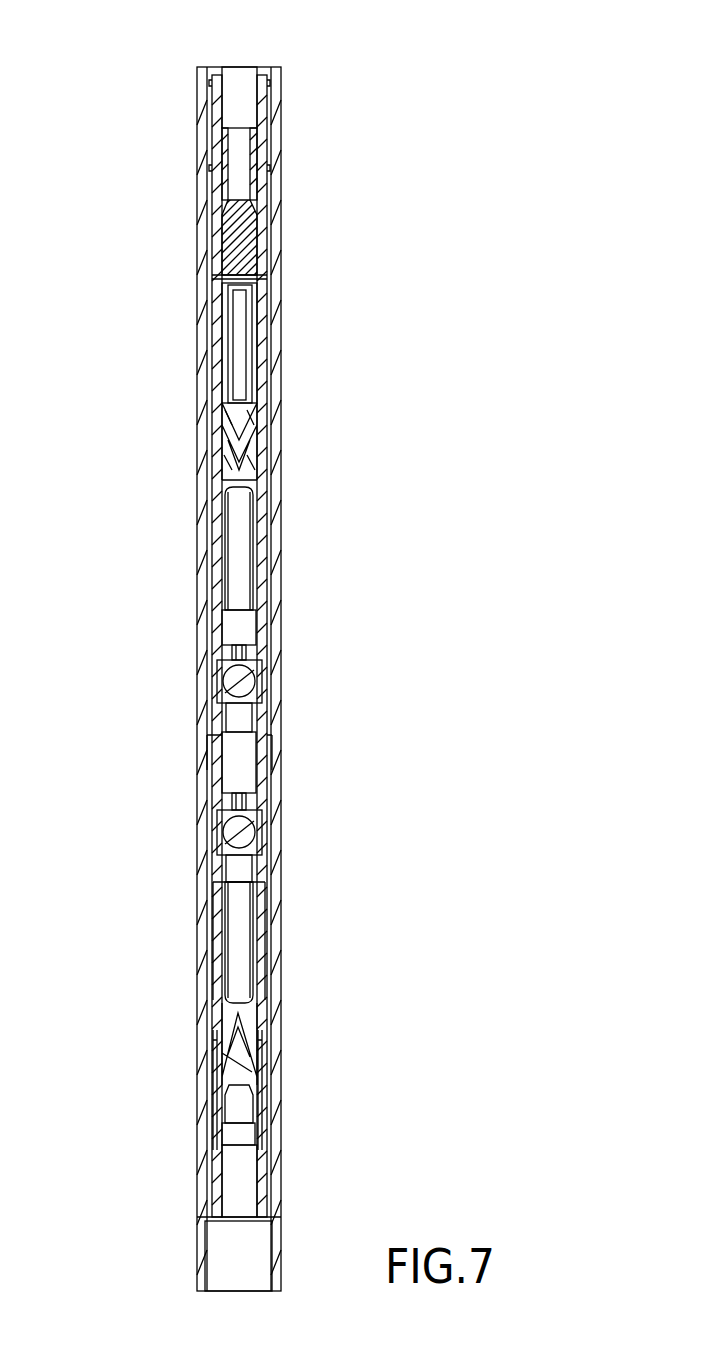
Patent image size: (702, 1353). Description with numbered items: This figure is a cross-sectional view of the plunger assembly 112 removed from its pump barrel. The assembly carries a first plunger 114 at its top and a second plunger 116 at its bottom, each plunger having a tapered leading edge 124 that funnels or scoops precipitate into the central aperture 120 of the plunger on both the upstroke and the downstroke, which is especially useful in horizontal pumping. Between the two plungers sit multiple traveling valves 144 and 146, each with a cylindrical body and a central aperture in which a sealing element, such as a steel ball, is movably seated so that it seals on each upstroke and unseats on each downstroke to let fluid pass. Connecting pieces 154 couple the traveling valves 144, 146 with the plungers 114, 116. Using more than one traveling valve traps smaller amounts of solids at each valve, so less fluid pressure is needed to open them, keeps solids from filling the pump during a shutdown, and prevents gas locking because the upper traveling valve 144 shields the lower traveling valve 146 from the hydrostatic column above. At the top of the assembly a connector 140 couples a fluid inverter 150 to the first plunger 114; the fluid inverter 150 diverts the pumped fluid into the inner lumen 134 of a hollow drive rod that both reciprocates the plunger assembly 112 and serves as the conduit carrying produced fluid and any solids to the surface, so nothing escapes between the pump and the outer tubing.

The plunger assembly 112 is at (440, 593).
The first plunger 114 is at (115, 277).
The second plunger 116 is at (206, 1026).
The central aperture 120 is at (247, 1190).
The tapered leading edge 124 is at (268, 278).
The inner lumen 134 is at (238, 66).
The connector 140 is at (258, 302).
The traveling valve 144 is at (204, 737).
The traveling valve 146 is at (206, 876).
The fluid inverter 150 is at (218, 273).
The connecting piece 154 is at (266, 533).